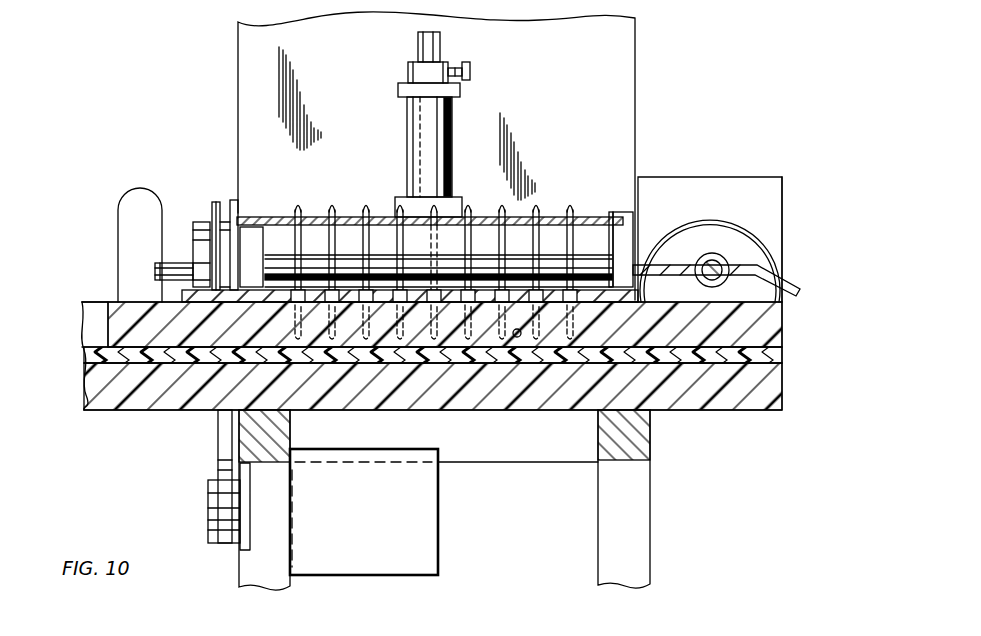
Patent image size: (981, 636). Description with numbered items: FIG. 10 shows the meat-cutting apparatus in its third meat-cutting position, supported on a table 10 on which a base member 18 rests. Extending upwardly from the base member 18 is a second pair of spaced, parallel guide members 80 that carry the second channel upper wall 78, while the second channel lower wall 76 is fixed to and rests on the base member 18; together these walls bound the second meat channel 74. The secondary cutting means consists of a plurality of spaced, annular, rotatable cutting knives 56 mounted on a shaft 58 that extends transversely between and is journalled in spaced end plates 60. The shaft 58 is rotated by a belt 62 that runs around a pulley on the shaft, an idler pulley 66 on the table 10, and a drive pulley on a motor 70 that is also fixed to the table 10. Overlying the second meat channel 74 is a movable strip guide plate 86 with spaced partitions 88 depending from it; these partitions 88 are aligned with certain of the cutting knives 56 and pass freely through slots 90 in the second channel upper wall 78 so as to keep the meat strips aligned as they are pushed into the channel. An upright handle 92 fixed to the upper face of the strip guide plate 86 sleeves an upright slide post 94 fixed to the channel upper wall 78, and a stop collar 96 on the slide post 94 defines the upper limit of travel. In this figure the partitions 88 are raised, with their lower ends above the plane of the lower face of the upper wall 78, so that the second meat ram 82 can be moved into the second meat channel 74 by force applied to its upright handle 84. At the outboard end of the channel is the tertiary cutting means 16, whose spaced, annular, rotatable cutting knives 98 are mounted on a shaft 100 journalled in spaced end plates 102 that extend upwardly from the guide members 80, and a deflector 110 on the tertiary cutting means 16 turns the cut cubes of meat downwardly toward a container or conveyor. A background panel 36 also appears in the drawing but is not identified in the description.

The table 10 is at (640, 535).
The tertiary cutting means 16 is at (746, 216).
The base member 18 is at (95, 398).
The housing panel 36 is at (643, 62).
The cutting knives 56 is at (365, 208).
The shaft 58 is at (175, 268).
The end plates 60 is at (625, 212).
The belt 62 is at (222, 440).
The idler pulley 66 is at (212, 490).
The motor 70 is at (364, 512).
The second meat channel 74 is at (516, 337).
The second channel lower wall 76 is at (95, 352).
The second channel upper wall 78 is at (212, 200).
The guide members 80 is at (95, 330).
The second meat ram 82 is at (115, 318).
The handle 84 is at (140, 195).
The strip guide plate 86 is at (255, 215).
The partitions 88 is at (298, 245).
The slots 90 is at (306, 305).
The handle 92 is at (445, 115).
The slide post 94 is at (440, 40).
The stop collar 96 is at (409, 72).
The cutting knives 98 is at (756, 235).
The shaft 100 is at (712, 262).
The end plates 102 is at (700, 178).
The deflector 110 is at (800, 282).